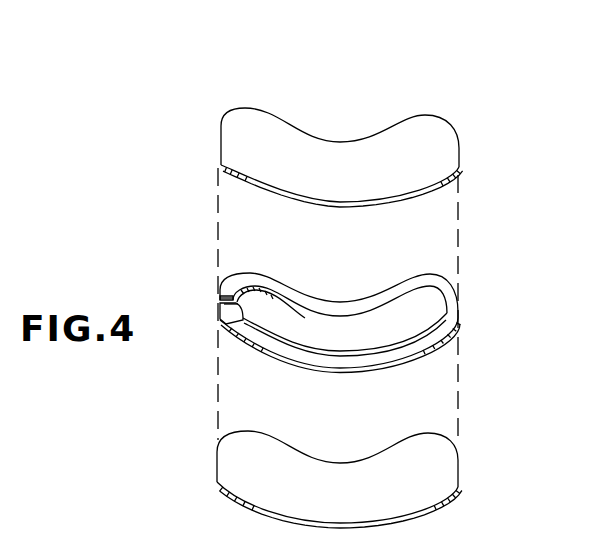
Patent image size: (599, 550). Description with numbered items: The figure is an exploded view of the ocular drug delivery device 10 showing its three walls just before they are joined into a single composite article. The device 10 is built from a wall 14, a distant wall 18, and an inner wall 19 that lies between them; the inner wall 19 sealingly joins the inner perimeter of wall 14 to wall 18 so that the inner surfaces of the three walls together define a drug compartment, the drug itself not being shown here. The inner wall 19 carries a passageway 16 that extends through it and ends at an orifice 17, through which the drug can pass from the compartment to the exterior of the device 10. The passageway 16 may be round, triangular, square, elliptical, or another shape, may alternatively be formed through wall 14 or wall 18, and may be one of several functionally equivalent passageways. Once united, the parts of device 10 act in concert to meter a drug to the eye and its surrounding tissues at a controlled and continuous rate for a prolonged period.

The ocular drug delivery device 10 is at (408, 96).
The wall 14 is at (450, 154).
The passageway 16 is at (243, 320).
The orifice 17 is at (220, 300).
The distant wall 18 is at (440, 473).
The inner wall 19 is at (455, 316).